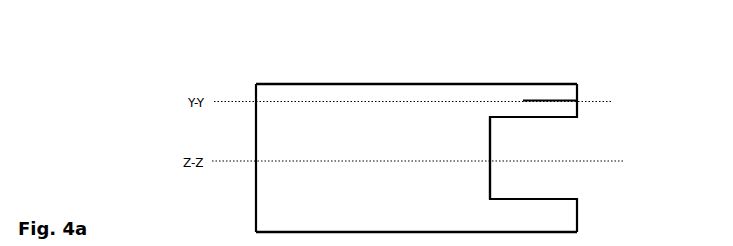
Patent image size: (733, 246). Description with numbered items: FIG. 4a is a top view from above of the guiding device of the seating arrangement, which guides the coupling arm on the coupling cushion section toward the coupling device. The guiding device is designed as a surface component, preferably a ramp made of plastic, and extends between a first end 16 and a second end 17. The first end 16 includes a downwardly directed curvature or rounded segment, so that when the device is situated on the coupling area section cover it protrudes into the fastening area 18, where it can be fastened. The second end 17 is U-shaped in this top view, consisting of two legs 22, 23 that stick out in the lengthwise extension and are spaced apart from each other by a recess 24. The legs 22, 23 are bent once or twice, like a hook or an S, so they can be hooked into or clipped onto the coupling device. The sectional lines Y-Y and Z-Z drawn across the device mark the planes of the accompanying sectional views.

The first end 16 is at (188, 128).
The second end 17 is at (608, 141).
The fastening area 18 is at (383, 132).
The leg 22 is at (548, 93).
The leg 23 is at (548, 220).
The recess 24 is at (551, 159).